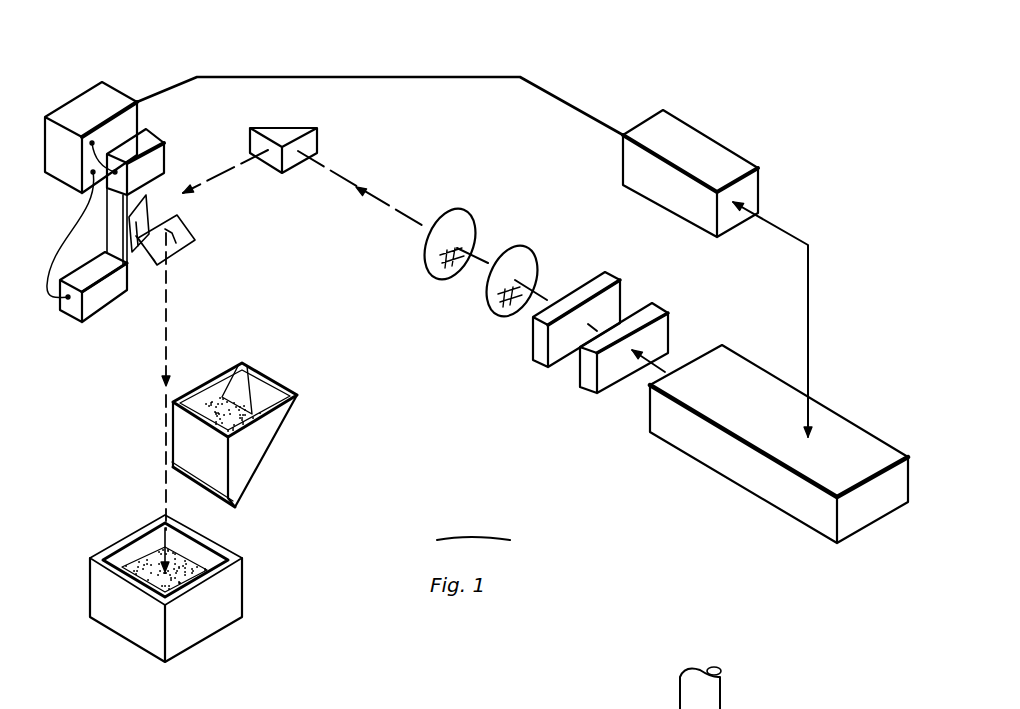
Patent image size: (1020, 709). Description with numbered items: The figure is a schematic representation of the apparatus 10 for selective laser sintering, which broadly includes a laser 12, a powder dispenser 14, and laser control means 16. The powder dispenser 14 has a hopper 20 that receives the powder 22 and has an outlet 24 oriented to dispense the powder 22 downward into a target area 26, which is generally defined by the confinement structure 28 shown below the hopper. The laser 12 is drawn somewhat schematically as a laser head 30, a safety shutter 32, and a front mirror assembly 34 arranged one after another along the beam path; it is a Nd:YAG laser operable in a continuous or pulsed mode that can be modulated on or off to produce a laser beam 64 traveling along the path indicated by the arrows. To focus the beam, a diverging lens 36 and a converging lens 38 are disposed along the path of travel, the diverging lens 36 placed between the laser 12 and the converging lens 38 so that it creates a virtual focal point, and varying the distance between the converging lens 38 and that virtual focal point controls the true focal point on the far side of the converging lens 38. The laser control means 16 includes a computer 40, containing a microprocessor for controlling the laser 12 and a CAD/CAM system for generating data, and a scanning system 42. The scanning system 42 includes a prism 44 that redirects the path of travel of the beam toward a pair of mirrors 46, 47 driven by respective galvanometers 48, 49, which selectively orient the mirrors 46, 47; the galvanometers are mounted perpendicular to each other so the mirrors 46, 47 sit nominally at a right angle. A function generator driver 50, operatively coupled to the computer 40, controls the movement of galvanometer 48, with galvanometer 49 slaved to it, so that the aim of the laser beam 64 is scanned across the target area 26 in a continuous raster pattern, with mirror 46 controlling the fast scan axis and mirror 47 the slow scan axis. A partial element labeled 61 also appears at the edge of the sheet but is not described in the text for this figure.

The apparatus 10 is at (668, 493).
The laser 12 is at (598, 427).
The powder dispenser 14 is at (285, 438).
The laser control means 16 is at (628, 100).
The hopper 20 is at (282, 435).
The powder 22 is at (248, 393).
The outlet 24 is at (226, 510).
The target area 26 is at (138, 567).
The confinement structure 28 is at (176, 588).
The laser head 30 is at (683, 455).
The safety shutter 32 is at (588, 372).
The front mirror assembly 34 is at (537, 343).
The diverging lens 36 is at (487, 303).
The converging lens 38 is at (430, 268).
The computer 40 is at (718, 140).
The scanning system 42 is at (105, 73).
The prism 44 is at (320, 133).
The mirror 46 is at (150, 200).
The mirror 47 is at (183, 233).
The galvanometer 48 is at (153, 130).
The galvanometer 49 is at (98, 313).
The function generator driver 50 is at (76, 101).
The cylinder 61 is at (741, 688).
The laser beam 64 is at (165, 492).